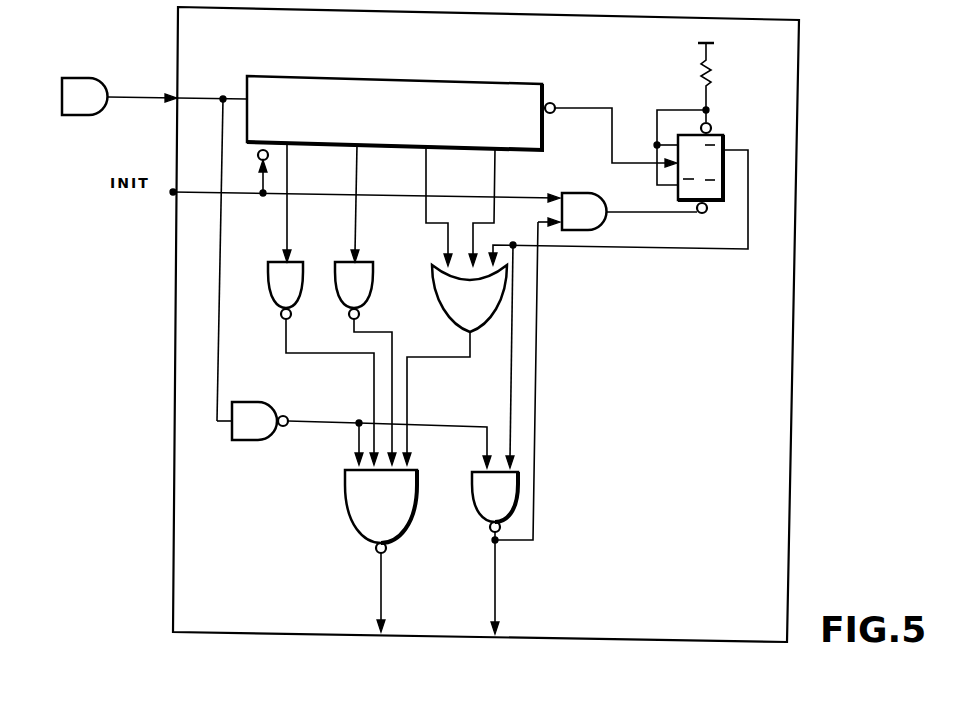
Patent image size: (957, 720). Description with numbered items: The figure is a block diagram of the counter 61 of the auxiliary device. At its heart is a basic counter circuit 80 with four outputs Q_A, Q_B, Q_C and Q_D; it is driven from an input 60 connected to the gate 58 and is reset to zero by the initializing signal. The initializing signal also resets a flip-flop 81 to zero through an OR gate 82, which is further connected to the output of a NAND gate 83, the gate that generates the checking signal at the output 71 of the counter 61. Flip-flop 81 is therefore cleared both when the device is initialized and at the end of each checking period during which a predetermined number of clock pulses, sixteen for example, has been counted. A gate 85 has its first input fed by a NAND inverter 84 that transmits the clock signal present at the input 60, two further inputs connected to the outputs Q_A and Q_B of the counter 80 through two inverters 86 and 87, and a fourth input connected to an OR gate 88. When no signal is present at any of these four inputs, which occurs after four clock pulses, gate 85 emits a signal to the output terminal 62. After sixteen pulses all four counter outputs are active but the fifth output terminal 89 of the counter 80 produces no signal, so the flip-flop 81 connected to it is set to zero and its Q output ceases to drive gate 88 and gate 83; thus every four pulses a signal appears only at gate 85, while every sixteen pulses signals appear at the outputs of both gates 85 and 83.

The gate 58 is at (85, 96).
The input 60 is at (173, 104).
The counter 61 is at (486, 324).
The output terminal 62 is at (384, 633).
The output 71 is at (498, 636).
The basic counter circuit 80 is at (522, 92).
The flip-flop 81 is at (713, 140).
The OR gate 82 is at (572, 211).
The NAND gate 83 is at (495, 502).
The NAND inverter 84 is at (354, 435).
The gate 85 is at (381, 511).
The inverter 86 is at (323, 363).
The inverter 87 is at (365, 363).
The OR gate 88 is at (455, 365).
The fifth output terminal 89 is at (552, 114).